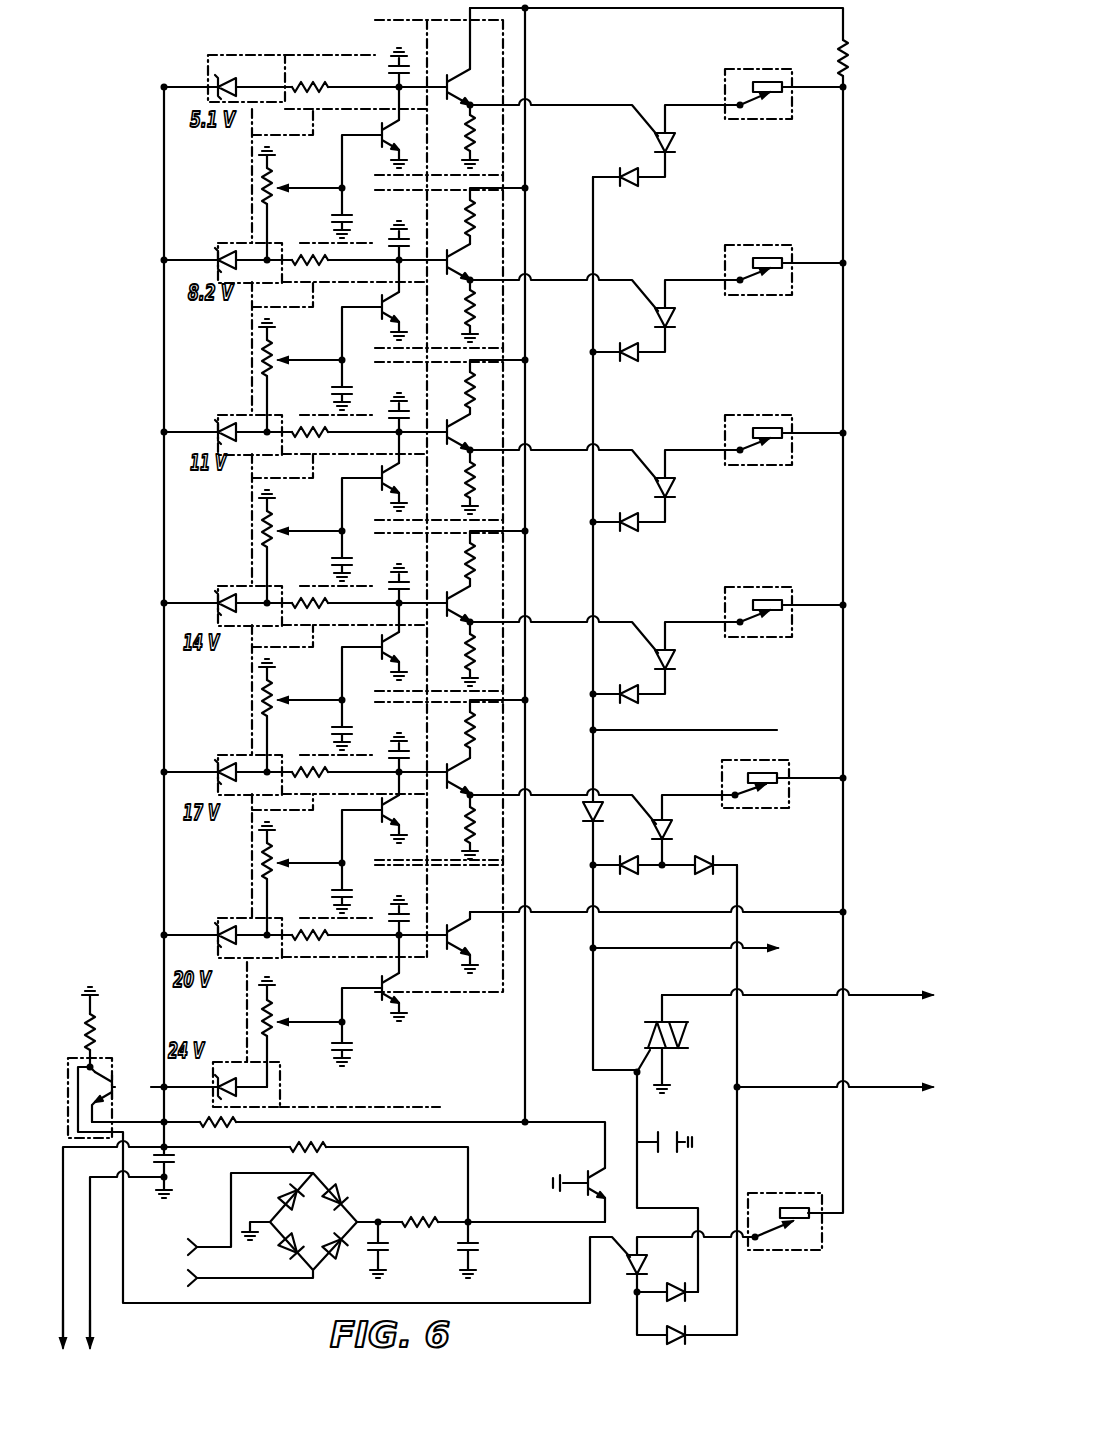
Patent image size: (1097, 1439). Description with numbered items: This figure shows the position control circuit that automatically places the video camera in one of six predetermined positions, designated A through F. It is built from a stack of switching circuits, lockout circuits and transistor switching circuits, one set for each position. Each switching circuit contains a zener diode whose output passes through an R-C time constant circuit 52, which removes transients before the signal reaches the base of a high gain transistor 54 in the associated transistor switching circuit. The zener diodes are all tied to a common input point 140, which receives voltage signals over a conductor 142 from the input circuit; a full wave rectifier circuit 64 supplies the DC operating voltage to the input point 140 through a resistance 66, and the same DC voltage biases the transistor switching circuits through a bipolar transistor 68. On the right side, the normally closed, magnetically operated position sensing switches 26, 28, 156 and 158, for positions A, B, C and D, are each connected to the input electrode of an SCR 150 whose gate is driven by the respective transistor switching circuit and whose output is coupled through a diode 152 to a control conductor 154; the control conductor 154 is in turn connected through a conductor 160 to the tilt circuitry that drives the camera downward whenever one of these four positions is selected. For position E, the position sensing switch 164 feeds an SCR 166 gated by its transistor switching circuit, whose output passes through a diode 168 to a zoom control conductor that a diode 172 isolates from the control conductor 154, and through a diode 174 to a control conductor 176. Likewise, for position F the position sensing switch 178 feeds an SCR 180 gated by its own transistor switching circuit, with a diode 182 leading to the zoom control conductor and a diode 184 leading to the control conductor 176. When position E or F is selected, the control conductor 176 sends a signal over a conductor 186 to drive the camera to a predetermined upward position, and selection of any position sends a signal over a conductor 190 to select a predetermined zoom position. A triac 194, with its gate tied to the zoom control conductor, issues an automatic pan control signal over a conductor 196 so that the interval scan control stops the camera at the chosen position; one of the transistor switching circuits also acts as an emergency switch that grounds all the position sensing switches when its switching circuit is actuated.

The position sensing switch 26 is at (762, 119).
The position sensing switch 28 is at (762, 295).
The R-C time constant circuit 52 is at (325, 55).
The transistor 54 is at (462, 79).
The full wave rectifier circuit 64 is at (332, 1180).
The resistance 66 is at (302, 1152).
The bipolar transistor 68 is at (598, 1172).
The common input point 140 is at (168, 1150).
The conductor 142 is at (63, 1318).
The SCR 150 is at (657, 142).
The diode 152 is at (638, 182).
The control conductor 154 is at (594, 408).
The position sensing switch 156 is at (761, 465).
The position sensing switch 158 is at (762, 637).
The conductor 160 is at (646, 733).
The position sensing switch 164 is at (762, 808).
The SCR 166 is at (674, 828).
The diode 168 is at (628, 873).
The diode 172 is at (585, 818).
The diode 174 is at (710, 875).
The control conductor 176 is at (740, 1033).
The position sensing switch 178 is at (775, 1250).
The SCR 180 is at (630, 1265).
The diode 182 is at (684, 1296).
The diode 184 is at (684, 1338).
The conductor 186 is at (905, 1085).
The conductor 190 is at (618, 947).
The triac 194 is at (650, 1040).
The conductor 196 is at (905, 993).